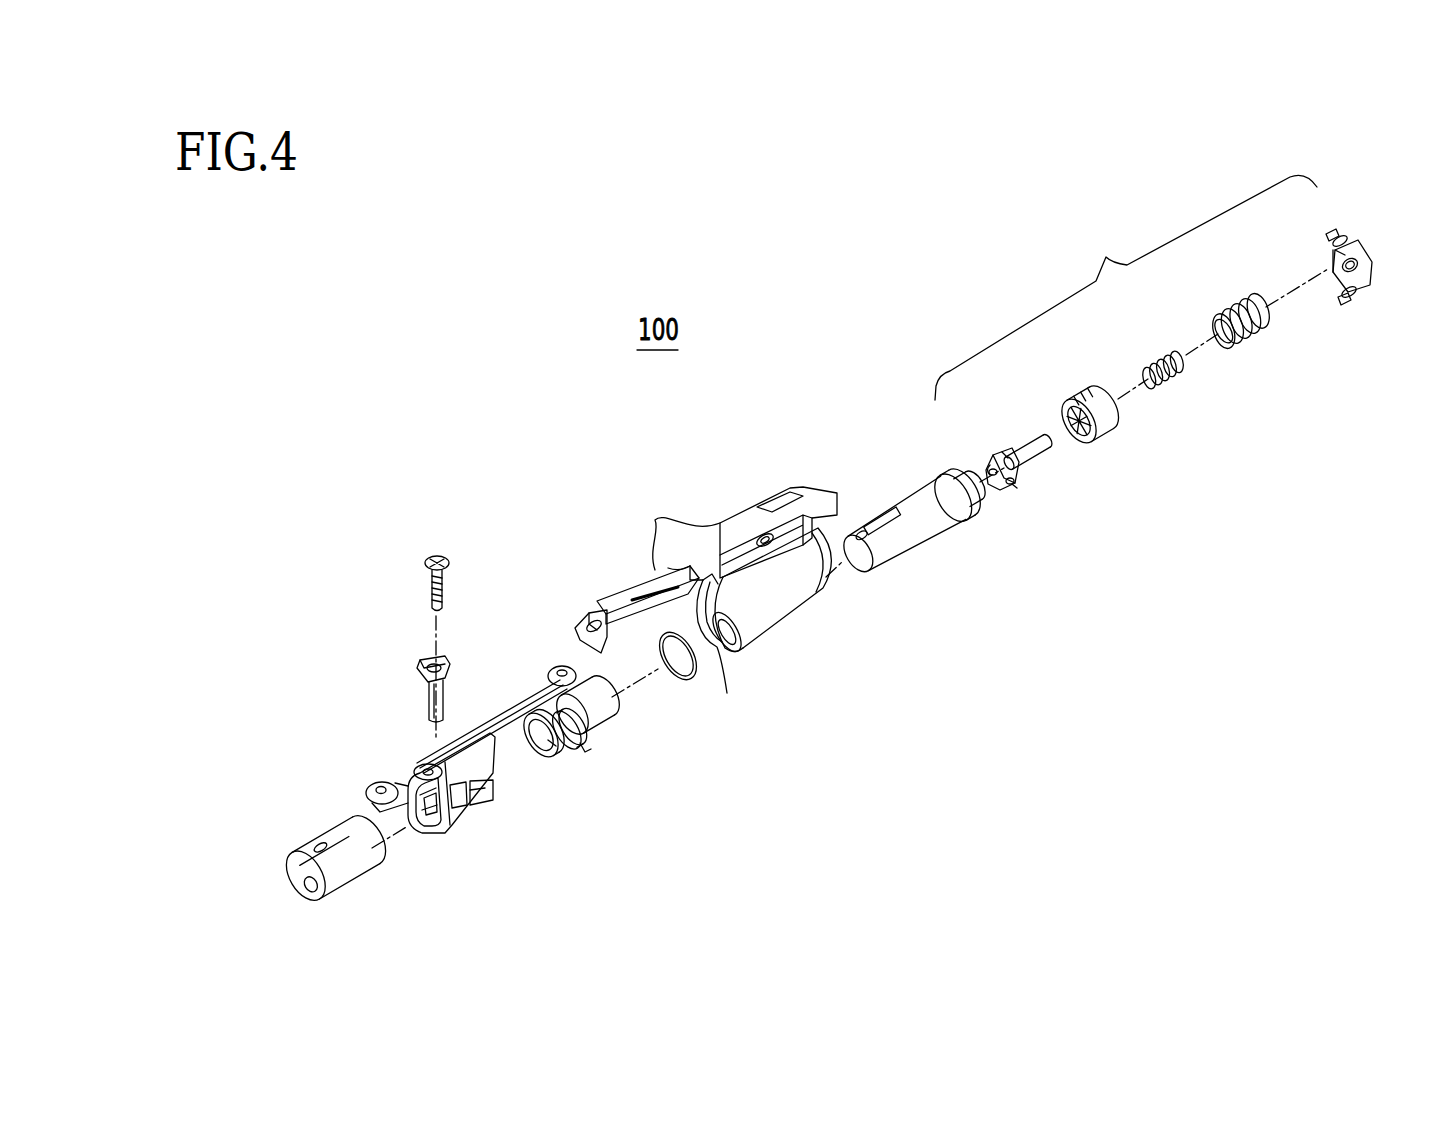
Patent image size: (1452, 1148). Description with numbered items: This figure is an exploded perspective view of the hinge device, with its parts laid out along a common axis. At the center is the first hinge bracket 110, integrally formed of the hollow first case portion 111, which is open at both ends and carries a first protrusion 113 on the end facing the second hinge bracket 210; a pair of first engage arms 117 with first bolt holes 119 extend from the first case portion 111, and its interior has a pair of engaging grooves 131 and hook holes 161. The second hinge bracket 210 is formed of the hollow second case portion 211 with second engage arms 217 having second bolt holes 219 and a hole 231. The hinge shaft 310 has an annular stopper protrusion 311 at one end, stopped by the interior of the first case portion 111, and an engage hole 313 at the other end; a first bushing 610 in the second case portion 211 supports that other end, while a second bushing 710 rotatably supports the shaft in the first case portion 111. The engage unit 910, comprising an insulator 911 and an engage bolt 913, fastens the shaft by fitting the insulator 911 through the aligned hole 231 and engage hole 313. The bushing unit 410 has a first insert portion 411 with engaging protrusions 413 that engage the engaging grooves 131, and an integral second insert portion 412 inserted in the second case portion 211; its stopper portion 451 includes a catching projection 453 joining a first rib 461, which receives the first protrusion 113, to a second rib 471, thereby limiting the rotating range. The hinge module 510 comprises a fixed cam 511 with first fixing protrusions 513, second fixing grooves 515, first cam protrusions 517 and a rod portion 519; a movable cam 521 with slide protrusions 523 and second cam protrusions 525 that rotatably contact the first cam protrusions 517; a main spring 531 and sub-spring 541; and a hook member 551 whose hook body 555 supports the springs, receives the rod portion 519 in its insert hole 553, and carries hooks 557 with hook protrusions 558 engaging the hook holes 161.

The first hinge bracket 110 is at (781, 630).
The first case portion 111 is at (775, 625).
The first protrusion 113 is at (690, 563).
The first engage arms 117 is at (660, 542).
The first bolt hole 119 is at (590, 624).
The engaging grooves 131 is at (736, 670).
The hook holes 161 is at (812, 592).
The second hinge bracket 210 is at (456, 832).
The second case portion 211 is at (480, 813).
The second engage arms 217 is at (418, 770).
The second bolt hole 219 is at (378, 791).
The hole 231 is at (438, 826).
The hinge shaft 310 is at (930, 546).
The stopper protrusion 311 is at (975, 508).
The engage hole 313 is at (862, 535).
The bushing unit 410 is at (568, 777).
The first insert portion 411 is at (603, 704).
The second insert portion 412 is at (528, 735).
The engaging protrusions 413 is at (545, 742).
The stopper portion 451 is at (668, 757).
The catching projection 453 is at (590, 750).
The first rib 461 is at (590, 735).
The second rib 471 is at (586, 754).
The hinge module 510 is at (1126, 287).
The fixed cam 511 is at (1004, 459).
The first fixing protrusions 513 is at (988, 462).
The second fixing groove 515 is at (990, 457).
The first cam protrusions 517 is at (1003, 453).
The rod portion 519 is at (1030, 440).
The movable cam 521 is at (1132, 412).
The slide protrusions 523 is at (1085, 385).
The second cam protrusions 525 is at (1067, 437).
The main spring 531 is at (1262, 325).
The sub-spring 541 is at (1186, 372).
The hook member 551 is at (1352, 303).
The insert hole 553 is at (1336, 268).
The hook body 555 is at (1370, 264).
The hooks 557 is at (1348, 238).
The hook protrusions 558 is at (1332, 234).
The first bushing 610 is at (340, 872).
The second bushing 710 is at (684, 682).
The engage unit 910 is at (405, 639).
The insulator 911 is at (428, 690).
The engage bolt 913 is at (428, 574).